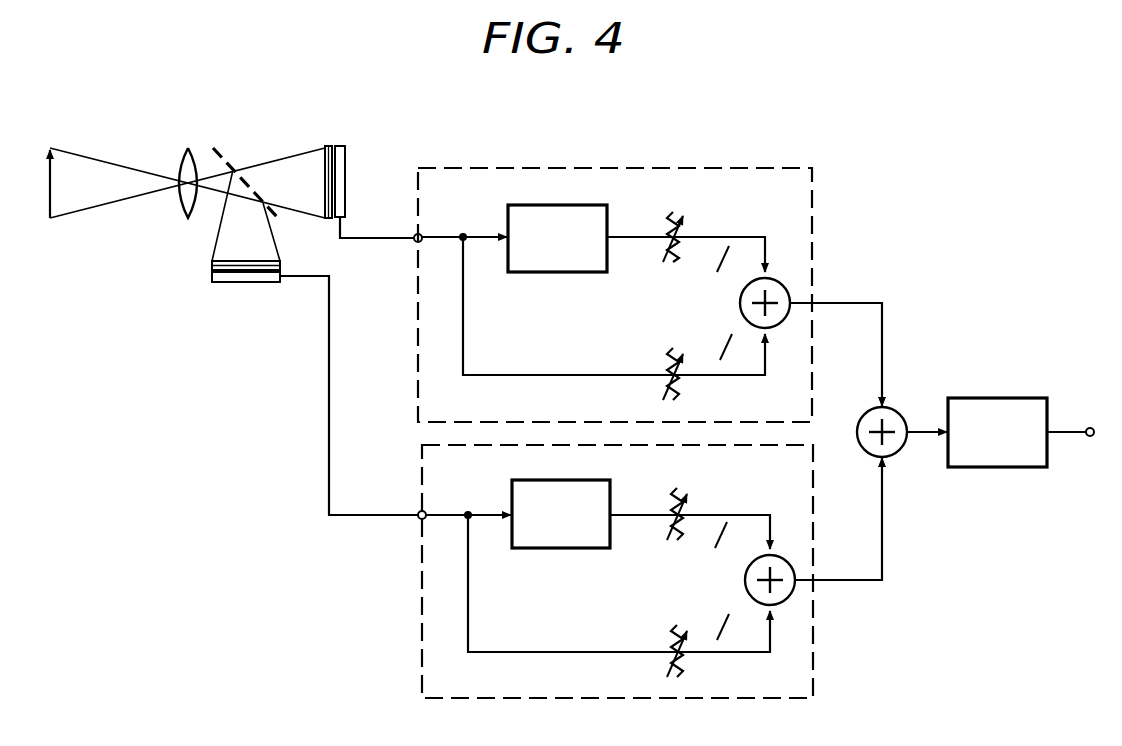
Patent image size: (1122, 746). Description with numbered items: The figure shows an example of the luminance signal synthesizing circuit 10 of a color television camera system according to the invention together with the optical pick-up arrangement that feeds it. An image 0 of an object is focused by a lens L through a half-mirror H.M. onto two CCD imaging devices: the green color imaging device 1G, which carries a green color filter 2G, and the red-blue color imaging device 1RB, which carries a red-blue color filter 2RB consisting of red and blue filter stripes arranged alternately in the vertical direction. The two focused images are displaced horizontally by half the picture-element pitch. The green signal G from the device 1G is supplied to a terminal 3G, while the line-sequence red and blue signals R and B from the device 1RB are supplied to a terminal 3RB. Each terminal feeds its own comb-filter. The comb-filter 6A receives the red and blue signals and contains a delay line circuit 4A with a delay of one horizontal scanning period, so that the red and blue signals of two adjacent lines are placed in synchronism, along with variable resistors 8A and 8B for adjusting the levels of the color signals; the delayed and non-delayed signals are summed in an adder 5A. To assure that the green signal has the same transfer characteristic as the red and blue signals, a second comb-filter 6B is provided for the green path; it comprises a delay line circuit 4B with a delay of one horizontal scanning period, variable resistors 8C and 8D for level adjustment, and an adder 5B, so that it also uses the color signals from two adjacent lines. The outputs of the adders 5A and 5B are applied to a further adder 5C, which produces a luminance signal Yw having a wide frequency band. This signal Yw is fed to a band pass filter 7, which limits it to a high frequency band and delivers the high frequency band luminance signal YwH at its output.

The image of object 0 is at (47, 178).
The lens L is at (178, 167).
The half-mirror H.M. is at (218, 148).
The green color filter 2G is at (326, 145).
The green color imaging device 1G is at (343, 146).
The terminal 3G is at (414, 236).
The red-blue color filter 2RB is at (212, 265).
The red-blue color imaging device 1RB is at (212, 280).
The terminal 3RB is at (418, 514).
The comb-filter 6B is at (615, 261).
The comb-filter 6A is at (617, 595).
The delay line circuit 4B is at (557, 272).
The delay line circuit 4A is at (557, 548).
The variable resistor 8A is at (688, 491).
The variable resistor 8B is at (686, 668).
The variable resistor 8C is at (686, 214).
The variable resistor 8D is at (685, 393).
The adder 5A is at (782, 563).
The adder 5B is at (780, 288).
The adder 5C is at (901, 413).
The band pass filter 7 is at (1003, 398).
The luminance signal synthesizing circuit 10 is at (932, 272).
The luminance signal Yw is at (925, 437).
The high frequency band luminance signal YwH is at (1073, 437).